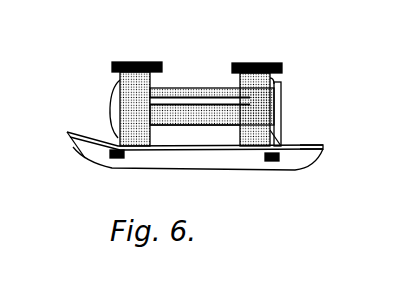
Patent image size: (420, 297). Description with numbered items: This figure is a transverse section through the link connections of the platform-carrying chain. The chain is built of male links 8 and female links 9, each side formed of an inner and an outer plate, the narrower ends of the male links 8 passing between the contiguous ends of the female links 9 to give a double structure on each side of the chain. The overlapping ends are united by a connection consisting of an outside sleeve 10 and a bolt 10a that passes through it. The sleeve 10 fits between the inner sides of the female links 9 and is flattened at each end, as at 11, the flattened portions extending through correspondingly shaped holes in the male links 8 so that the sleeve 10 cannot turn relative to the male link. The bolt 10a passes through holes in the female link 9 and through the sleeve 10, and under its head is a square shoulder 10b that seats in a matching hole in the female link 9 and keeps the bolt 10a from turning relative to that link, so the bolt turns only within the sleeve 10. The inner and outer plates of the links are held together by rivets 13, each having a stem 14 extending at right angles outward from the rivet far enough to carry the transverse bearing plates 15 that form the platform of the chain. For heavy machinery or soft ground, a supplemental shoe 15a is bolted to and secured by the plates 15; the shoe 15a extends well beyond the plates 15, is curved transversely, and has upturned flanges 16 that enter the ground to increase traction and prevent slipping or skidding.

The male link 8 is at (156, 62).
The female link 9 is at (284, 72).
The sleeve 10 is at (205, 80).
The bolt 10a is at (118, 102).
The square shoulder 10b is at (251, 90).
The flattened portion 11 is at (153, 125).
The rivet 13 is at (279, 84).
The stem 14 is at (272, 138).
The transverse bearing plate 15 is at (93, 138).
The supplemental shoe 15a is at (312, 150).
The upturned flange 16 is at (282, 163).